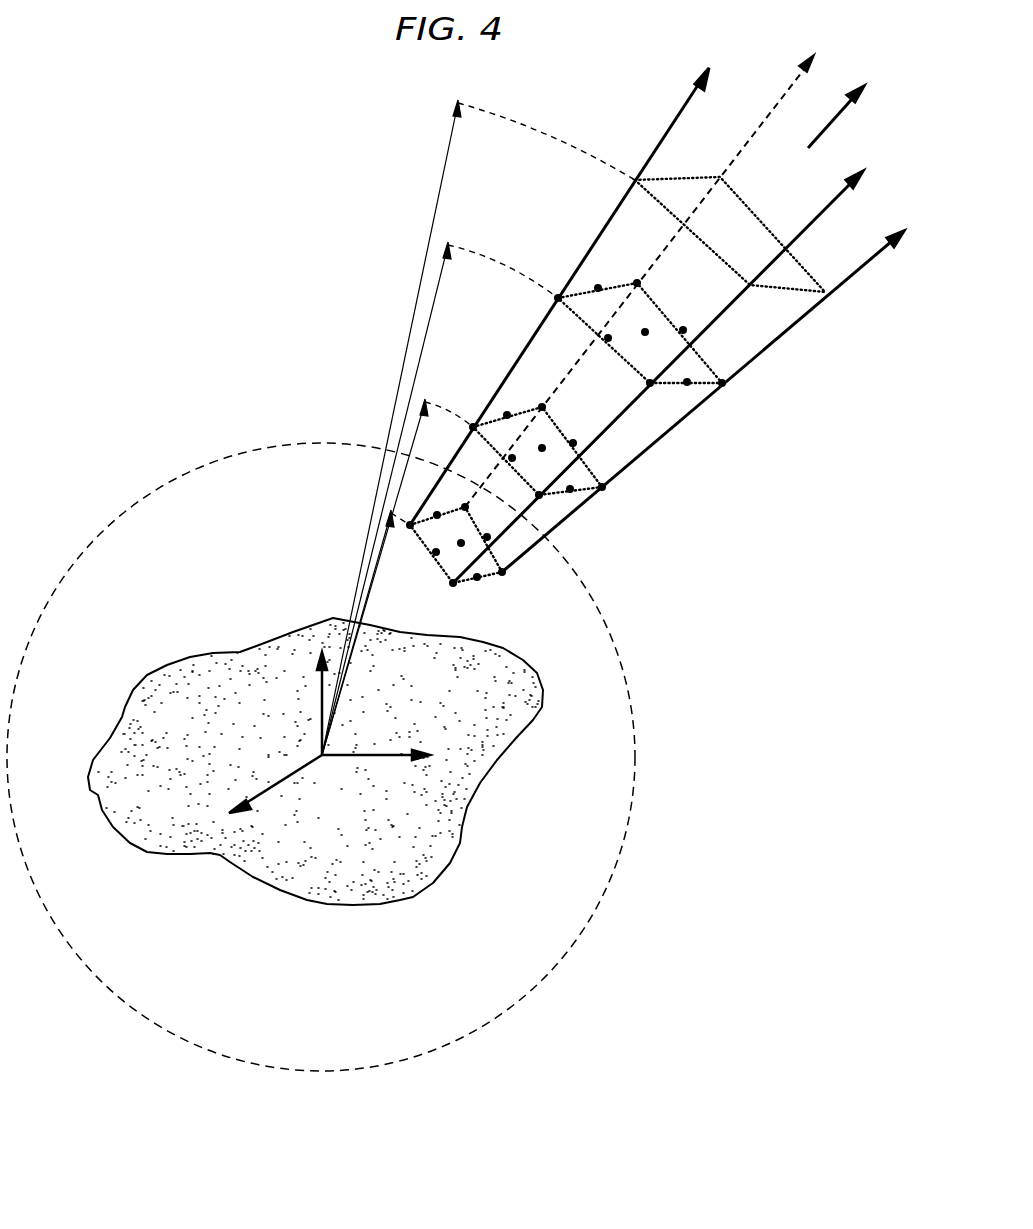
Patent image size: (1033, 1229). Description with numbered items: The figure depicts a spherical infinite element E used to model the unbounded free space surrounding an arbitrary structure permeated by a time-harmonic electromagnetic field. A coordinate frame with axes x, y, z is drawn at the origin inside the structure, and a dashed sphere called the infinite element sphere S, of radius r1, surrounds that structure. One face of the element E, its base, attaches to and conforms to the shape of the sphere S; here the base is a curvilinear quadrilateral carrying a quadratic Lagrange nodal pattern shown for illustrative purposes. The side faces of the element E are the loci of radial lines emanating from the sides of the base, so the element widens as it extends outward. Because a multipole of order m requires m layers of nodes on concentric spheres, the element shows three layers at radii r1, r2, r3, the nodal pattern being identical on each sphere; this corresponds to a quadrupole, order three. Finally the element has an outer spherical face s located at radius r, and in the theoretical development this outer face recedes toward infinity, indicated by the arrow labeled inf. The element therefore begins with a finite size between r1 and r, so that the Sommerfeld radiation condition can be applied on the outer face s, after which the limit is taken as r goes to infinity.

The infinite element sphere S is at (253, 378).
The spherical infinite element E is at (492, 578).
The outer face radius r-hat r is at (478, 408).
The radius r1 is at (372, 616).
The radius r2 is at (397, 560).
The radius r3 is at (440, 479).
The outer spherical face S-hat s is at (639, 281).
The x axis x is at (269, 793).
The y axis y is at (385, 758).
The z axis z is at (321, 692).
The direction to infinity inf is at (849, 101).